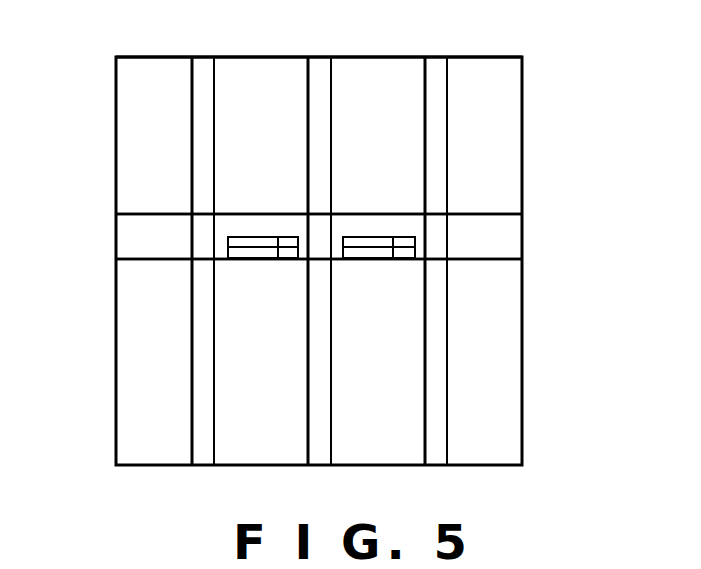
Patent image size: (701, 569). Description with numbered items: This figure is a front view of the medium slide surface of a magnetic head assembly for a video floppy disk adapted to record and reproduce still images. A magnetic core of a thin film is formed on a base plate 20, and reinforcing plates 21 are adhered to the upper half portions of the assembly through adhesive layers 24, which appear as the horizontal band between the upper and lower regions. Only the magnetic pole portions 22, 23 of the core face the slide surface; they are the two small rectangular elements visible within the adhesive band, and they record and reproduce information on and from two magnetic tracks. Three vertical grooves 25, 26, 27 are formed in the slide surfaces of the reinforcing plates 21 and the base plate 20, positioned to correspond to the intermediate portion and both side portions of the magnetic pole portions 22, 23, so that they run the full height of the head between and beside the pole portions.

The base plate 20 is at (503, 343).
The reinforcing plates 21 is at (503, 157).
The magnetic pole portion 22 is at (372, 255).
The magnetic pole portion 23 is at (260, 255).
The adhesive layers 24 is at (503, 238).
The groove 25 is at (323, 58).
The groove 26 is at (440, 90).
The groove 27 is at (198, 79).